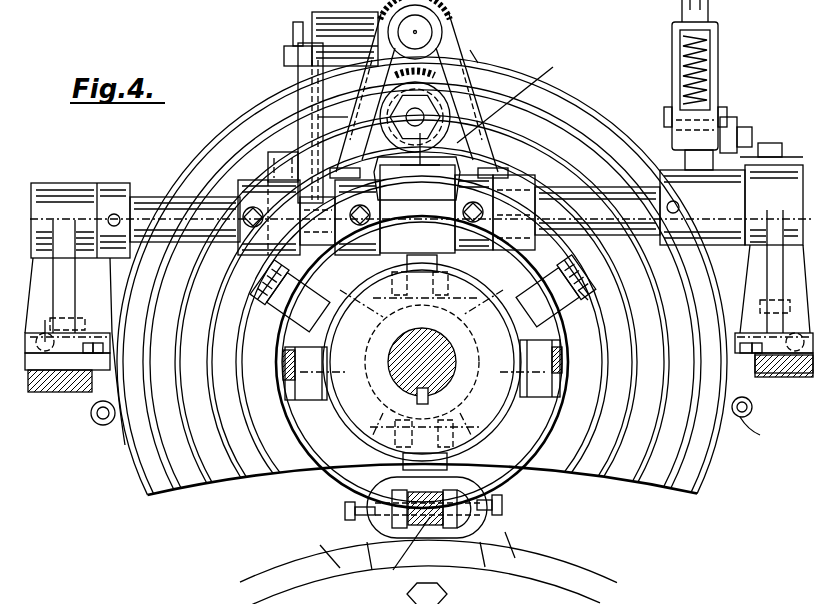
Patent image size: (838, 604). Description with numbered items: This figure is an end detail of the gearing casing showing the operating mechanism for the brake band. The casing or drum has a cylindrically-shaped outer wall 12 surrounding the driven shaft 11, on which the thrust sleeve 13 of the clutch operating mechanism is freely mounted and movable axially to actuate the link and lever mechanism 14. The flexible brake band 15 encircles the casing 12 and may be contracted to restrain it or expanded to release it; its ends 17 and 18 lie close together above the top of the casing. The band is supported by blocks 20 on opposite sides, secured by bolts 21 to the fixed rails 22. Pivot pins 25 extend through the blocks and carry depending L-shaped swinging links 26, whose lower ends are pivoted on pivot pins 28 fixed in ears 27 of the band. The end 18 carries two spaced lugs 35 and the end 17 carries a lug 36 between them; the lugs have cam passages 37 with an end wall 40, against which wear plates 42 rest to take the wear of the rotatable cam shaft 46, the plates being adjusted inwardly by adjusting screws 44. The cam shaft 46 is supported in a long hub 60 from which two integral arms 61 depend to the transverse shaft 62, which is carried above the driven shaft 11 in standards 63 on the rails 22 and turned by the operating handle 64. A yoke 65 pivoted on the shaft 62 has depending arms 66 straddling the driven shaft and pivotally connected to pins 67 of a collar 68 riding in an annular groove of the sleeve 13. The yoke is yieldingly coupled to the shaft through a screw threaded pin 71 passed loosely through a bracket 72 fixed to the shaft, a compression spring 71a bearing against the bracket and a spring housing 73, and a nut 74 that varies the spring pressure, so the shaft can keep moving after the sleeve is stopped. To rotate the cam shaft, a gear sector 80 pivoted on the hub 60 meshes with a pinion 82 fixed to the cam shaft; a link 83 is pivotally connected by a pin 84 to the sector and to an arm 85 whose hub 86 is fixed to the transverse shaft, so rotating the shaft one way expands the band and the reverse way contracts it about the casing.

The driven shaft 11 is at (448, 362).
The cylindrically-shaped outer wall 12 is at (166, 438).
The sleeve 13 is at (488, 403).
The link and lever mechanism 14 is at (592, 303).
The brake band 15 is at (704, 472).
The end of the brake band 17 is at (395, 301).
The end of the brake band 18 is at (282, 74).
The blocks 20 is at (115, 333).
The bolts 21 is at (84, 318).
The rails 22 is at (50, 393).
The pivot pins 25 is at (419, 322).
The swinging links 26 is at (106, 380).
The ears 27 is at (118, 436).
The pivot pins 28 is at (92, 418).
The lugs 35 is at (378, 522).
The lug 36 is at (505, 522).
The cam passages 37 is at (420, 517).
The end wall 40 is at (404, 555).
The wear plates 42 is at (392, 497).
The adjusting screws 44 is at (345, 510).
The cam shaft 46 is at (420, 24).
The hub 60 is at (433, 32).
The arms 61 is at (437, 100).
The transverse shaft 62 is at (148, 200).
The standards 63 is at (52, 190).
The operating handle 64 is at (712, 14).
The yoke 65 is at (417, 209).
The depending arms 66 is at (278, 322).
The pins 67 is at (285, 380).
The collar 68 is at (508, 410).
The screw threaded pin 71 is at (418, 117).
The compression spring 71a is at (424, 171).
The bracket 72 is at (494, 136).
The spring housing 73 is at (380, 133).
The nut 74 is at (406, 156).
The gear sector 80 is at (312, 38).
The pinion 82 is at (462, 45).
The link 83 is at (284, 56).
The pin 84 is at (293, 34).
The arm 85 is at (250, 172).
The hub 86 is at (240, 188).